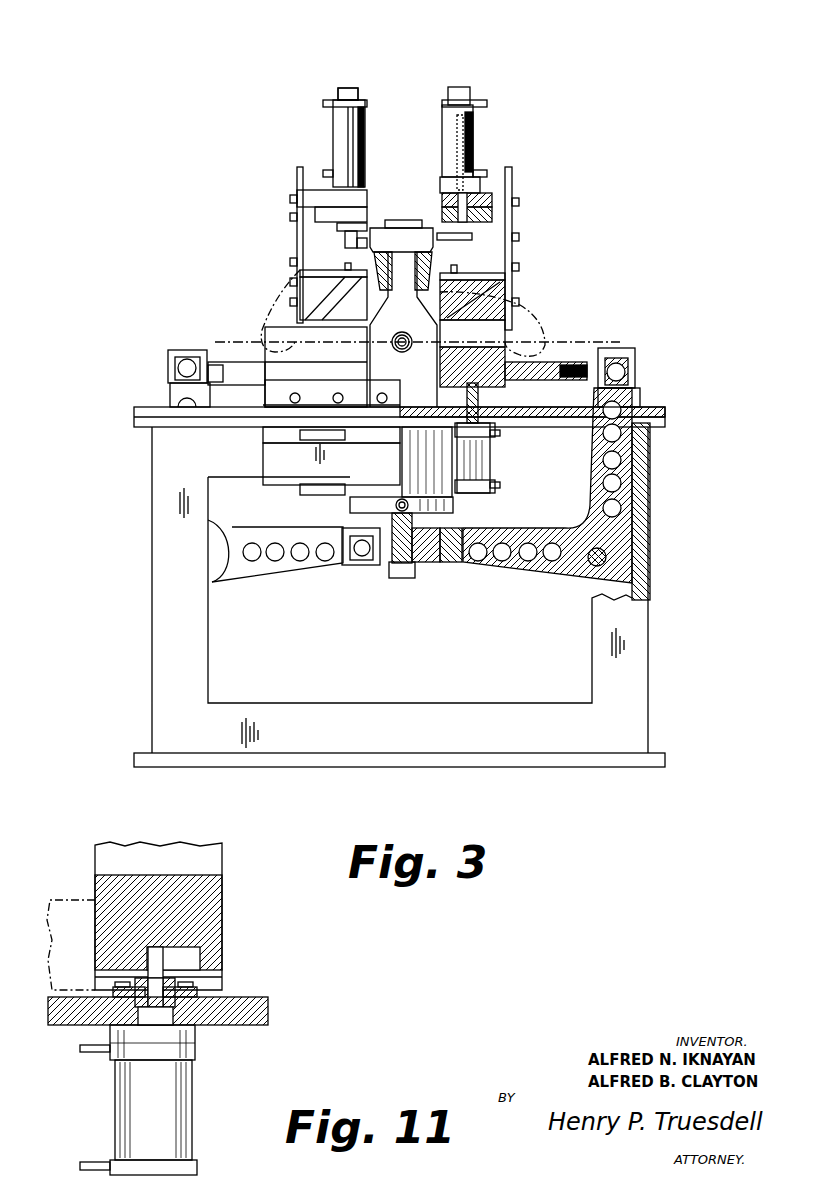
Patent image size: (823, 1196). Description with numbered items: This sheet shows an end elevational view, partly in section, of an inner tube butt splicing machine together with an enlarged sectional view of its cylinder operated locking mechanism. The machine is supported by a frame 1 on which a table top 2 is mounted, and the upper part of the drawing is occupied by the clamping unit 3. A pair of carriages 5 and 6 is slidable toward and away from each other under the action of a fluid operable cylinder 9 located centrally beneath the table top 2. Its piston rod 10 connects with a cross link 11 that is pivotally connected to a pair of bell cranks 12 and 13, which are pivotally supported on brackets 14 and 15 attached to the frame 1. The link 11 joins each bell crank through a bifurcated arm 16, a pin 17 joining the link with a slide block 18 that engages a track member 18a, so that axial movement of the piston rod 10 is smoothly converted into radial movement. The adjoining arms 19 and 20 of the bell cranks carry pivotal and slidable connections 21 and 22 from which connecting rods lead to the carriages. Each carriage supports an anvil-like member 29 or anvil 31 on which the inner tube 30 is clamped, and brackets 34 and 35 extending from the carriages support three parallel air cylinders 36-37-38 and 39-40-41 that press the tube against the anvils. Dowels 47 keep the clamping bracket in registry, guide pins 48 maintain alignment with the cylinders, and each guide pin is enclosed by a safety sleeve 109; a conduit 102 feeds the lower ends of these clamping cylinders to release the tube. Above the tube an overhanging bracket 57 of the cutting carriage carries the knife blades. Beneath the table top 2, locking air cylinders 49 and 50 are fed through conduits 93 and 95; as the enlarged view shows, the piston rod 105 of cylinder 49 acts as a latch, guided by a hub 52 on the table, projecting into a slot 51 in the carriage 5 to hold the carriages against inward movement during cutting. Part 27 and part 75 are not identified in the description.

In FIG. 3, the frame 1 is at (165, 590).
In FIG. 3, the table top 2 is at (140, 410).
In FIG. 11, the table top 2 is at (258, 1025).
In FIG. 3, the clamping unit 3 is at (540, 126).
In FIG. 3, the carriage 5 is at (307, 362).
In FIG. 11, the carriage 5 is at (205, 875).
In FIG. 3, the carriage 6 is at (500, 350).
In FIG. 3, the fluid operable cylinder 9 is at (458, 507).
In FIG. 3, the piston rod 10 is at (398, 580).
In FIG. 3, the cross link 11 is at (428, 566).
In FIG. 3, the bell crank 12 is at (257, 570).
In FIG. 3, the bell crank 13 is at (557, 582).
In FIG. 3, the bracket 14 is at (222, 544).
In FIG. 3, the bracket 15 is at (638, 512).
In FIG. 3, the bifurcated arm 16 is at (455, 566).
In FIG. 3, the pin 17 is at (446, 566).
In FIG. 3, the slide block 18 is at (345, 568).
In FIG. 3, the track member 18a is at (366, 566).
In FIG. 3, the adjoining arm 19 is at (180, 400).
In FIG. 3, the adjoining arm 20 is at (642, 397).
In FIG. 3, the pivotal and slidable connection 21 is at (185, 362).
In FIG. 3, the pivotal and slidable connection 22 is at (630, 365).
In FIG. 3, the slide base 27 is at (270, 406).
In FIG. 3, the anvil-like member 29 is at (298, 290).
In FIG. 3, the inner tube 30 is at (545, 300).
In FIG. 3, the anvil 31 is at (495, 300).
In FIG. 3, the bracket 34 is at (298, 210).
In FIG. 3, the bracket 35 is at (515, 232).
In FIG. 3, the air cylinders 36-37-38 is at (338, 118).
In FIG. 3, the air cylinders 39-40-41 is at (470, 112).
In FIG. 3, the dowels 47 is at (345, 250).
In FIG. 3, the guide pins 48 is at (468, 140).
In FIG. 3, the air cylinder 49 is at (320, 492).
In FIG. 11, the air cylinder 49 is at (135, 1095).
In FIG. 3, the air cylinder 50 is at (487, 466).
In FIG. 11, the slot 51 is at (200, 950).
In FIG. 11, the hub 52 is at (195, 992).
In FIG. 3, the overhanging bracket 57 is at (400, 220).
In FIG. 3, the cap 75 is at (330, 92).
In FIG. 11, the conduit 93 is at (90, 1164).
In FIG. 11, the conduit 95 is at (90, 1050).
In FIG. 3, the conduit 102 is at (325, 168).
In FIG. 11, the piston rod latch 105 is at (165, 962).
In FIG. 3, the sleeve or cover 109 is at (345, 143).